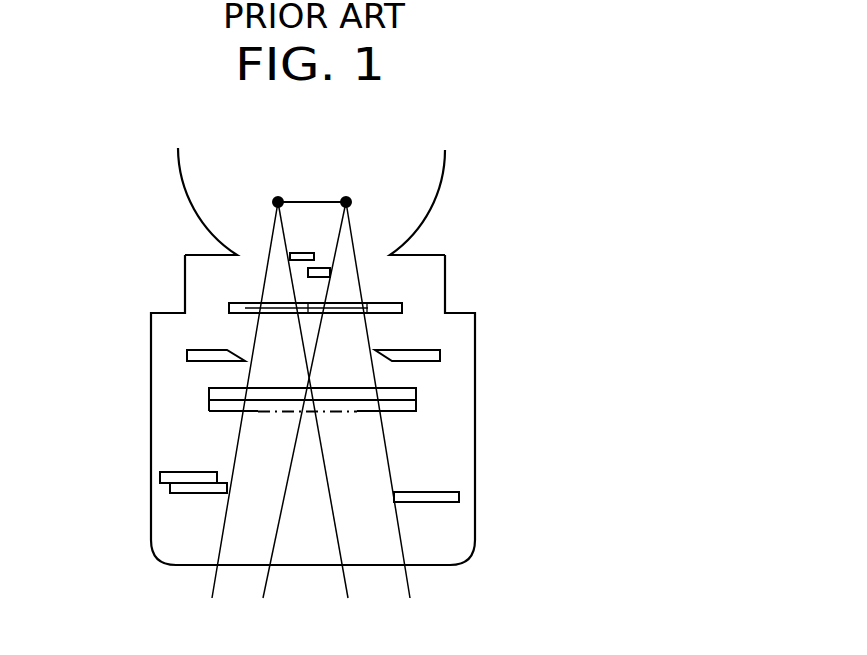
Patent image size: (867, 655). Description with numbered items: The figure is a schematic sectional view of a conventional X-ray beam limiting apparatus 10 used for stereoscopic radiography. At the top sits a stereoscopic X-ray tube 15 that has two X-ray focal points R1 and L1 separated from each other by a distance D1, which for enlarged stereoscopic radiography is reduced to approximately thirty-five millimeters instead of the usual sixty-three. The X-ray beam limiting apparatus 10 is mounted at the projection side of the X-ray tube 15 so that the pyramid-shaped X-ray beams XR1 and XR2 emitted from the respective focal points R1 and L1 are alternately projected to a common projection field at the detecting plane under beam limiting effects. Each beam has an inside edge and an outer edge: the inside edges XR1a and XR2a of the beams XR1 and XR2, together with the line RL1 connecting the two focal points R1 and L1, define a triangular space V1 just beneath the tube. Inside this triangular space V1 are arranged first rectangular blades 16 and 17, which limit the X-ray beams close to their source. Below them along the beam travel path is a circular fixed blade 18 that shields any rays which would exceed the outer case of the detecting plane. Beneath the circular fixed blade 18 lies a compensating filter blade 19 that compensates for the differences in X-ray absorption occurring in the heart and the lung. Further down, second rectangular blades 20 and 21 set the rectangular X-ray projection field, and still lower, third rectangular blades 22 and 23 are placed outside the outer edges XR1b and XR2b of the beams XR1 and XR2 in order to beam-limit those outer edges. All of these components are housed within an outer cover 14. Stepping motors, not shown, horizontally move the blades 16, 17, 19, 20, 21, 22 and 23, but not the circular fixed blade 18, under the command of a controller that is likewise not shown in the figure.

The X-ray beam limiting apparatus 10 is at (489, 430).
The outer cover 14 is at (475, 470).
The stereoscopic X-ray tube 15 is at (430, 207).
The first rectangular blade 16 is at (331, 272).
The first rectangular blade 17 is at (292, 252).
The circular fixed blade 18 is at (229, 310).
The compensating filter blade 19 is at (187, 352).
The second rectangular blade 20 is at (416, 395).
The second rectangular blade 21 is at (209, 405).
The third rectangular blade 22 is at (459, 496).
The third rectangular blade 23 is at (172, 493).
The distance between focal points D1 is at (278, 200).
The X-ray focal point L1 is at (276, 198).
The X-ray focal point R1 is at (348, 199).
The line connecting focal points RL1 is at (347, 204).
The triangular space V1 is at (330, 235).
The pyramid-shaped X-ray beam XR1 is at (427, 575).
The pyramid-shaped X-ray beam XR2 is at (184, 577).
The inside edge of X-ray beam XR1a is at (263, 585).
The outer edge of X-ray beam XR1b is at (410, 585).
The inside edge of X-ray beam XR2a is at (345, 585).
The outer edge of X-ray beam XR2b is at (212, 585).